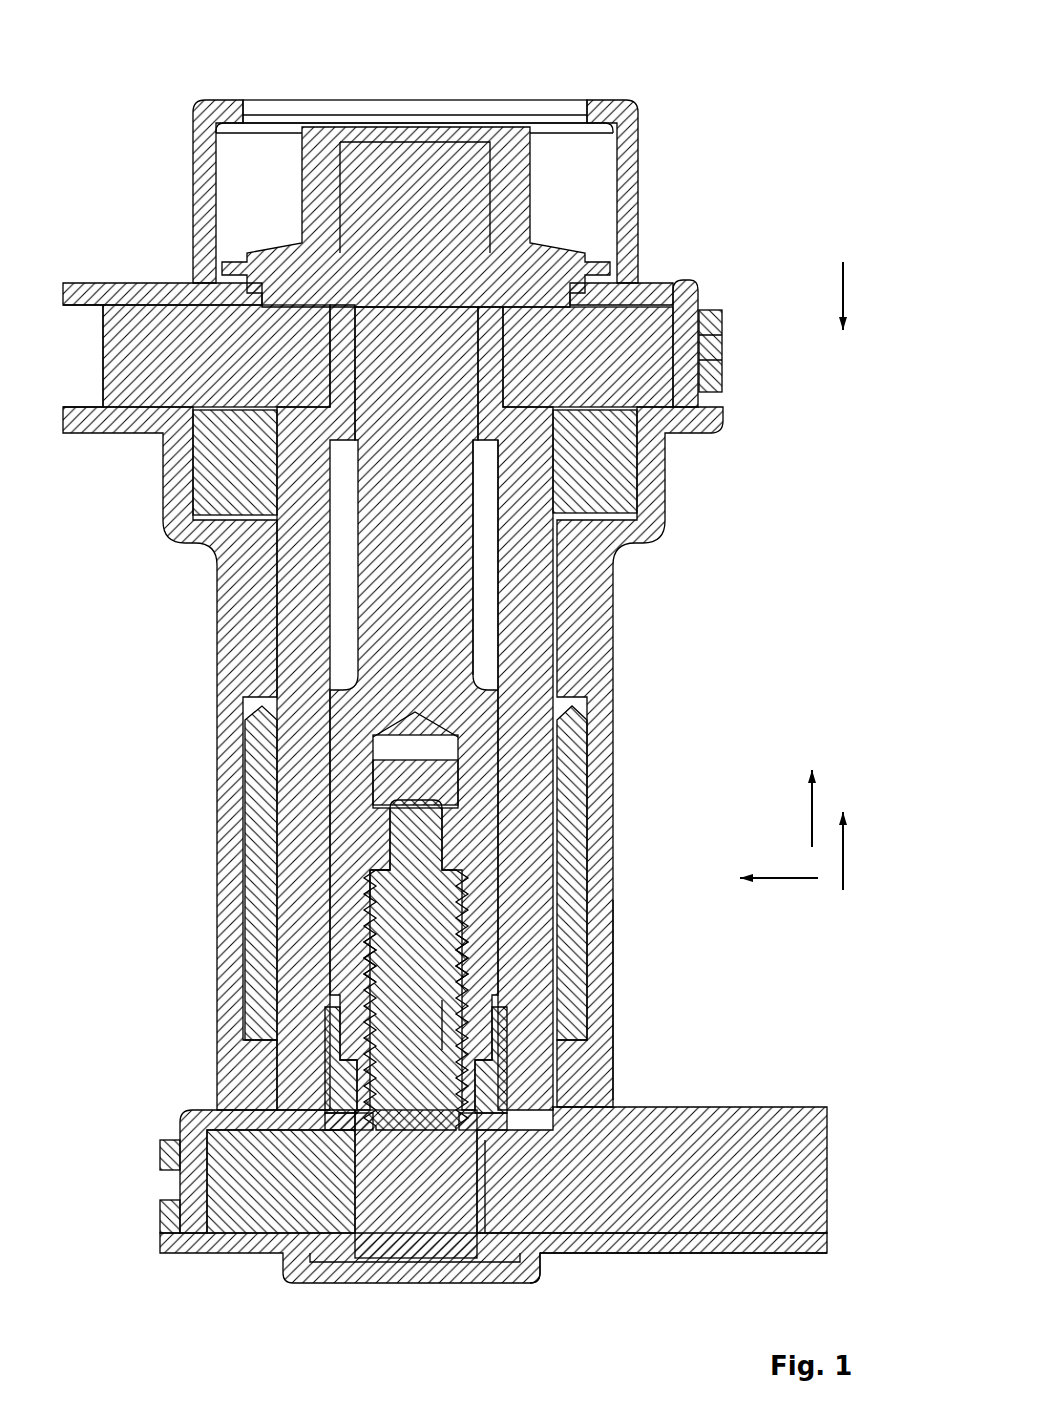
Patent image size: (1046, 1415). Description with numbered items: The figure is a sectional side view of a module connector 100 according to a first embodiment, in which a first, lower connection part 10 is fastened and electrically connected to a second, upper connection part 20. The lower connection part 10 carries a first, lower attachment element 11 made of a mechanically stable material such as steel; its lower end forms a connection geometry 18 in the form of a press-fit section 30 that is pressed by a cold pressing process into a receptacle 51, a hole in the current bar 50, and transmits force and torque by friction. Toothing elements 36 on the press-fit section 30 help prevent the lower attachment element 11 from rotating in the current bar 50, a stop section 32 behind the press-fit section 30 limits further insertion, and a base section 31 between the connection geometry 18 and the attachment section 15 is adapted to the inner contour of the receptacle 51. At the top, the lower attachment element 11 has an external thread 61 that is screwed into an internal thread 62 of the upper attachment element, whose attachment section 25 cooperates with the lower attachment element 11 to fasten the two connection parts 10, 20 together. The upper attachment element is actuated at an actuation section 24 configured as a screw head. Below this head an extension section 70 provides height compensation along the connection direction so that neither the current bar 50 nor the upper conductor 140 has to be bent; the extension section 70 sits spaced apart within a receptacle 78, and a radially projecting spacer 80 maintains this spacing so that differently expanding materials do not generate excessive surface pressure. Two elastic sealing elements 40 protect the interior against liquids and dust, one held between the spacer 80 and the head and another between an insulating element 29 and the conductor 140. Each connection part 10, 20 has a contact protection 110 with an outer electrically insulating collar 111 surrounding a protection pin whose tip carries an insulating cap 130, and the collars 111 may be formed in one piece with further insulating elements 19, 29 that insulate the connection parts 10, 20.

The module connector 100 is at (125, 45).
The second, upper connection part 20 is at (440, 205).
The actuation section 24 is at (300, 262).
The upper conductor 140 is at (160, 325).
The insulating element 29 is at (678, 298).
The sealing element 40 is at (493, 368).
The spacer 80 is at (498, 435).
The extension section 70 is at (385, 617).
The receptacle 78 is at (493, 595).
The insulating cap 130 is at (410, 780).
The contact protection 110 is at (185, 767).
The collar 111 is at (225, 835).
The attachment section 25 is at (350, 896).
The external thread 61 is at (363, 962).
The internal thread 62 is at (477, 968).
The attachment section 15 is at (445, 1025).
The first, lower attachment element 11 is at (408, 1078).
The first, lower connection part 10 is at (690, 1017).
The current bar 50 is at (737, 1160).
The receptacle 51 is at (485, 1170).
The base section 31 is at (378, 1157).
The connection geometry 18 is at (350, 1210).
The press-fit section 30 is at (347, 1215).
The stop section 32 is at (492, 1240).
The toothing element 36 is at (545, 1274).
The insulating element 19 is at (549, 1284).